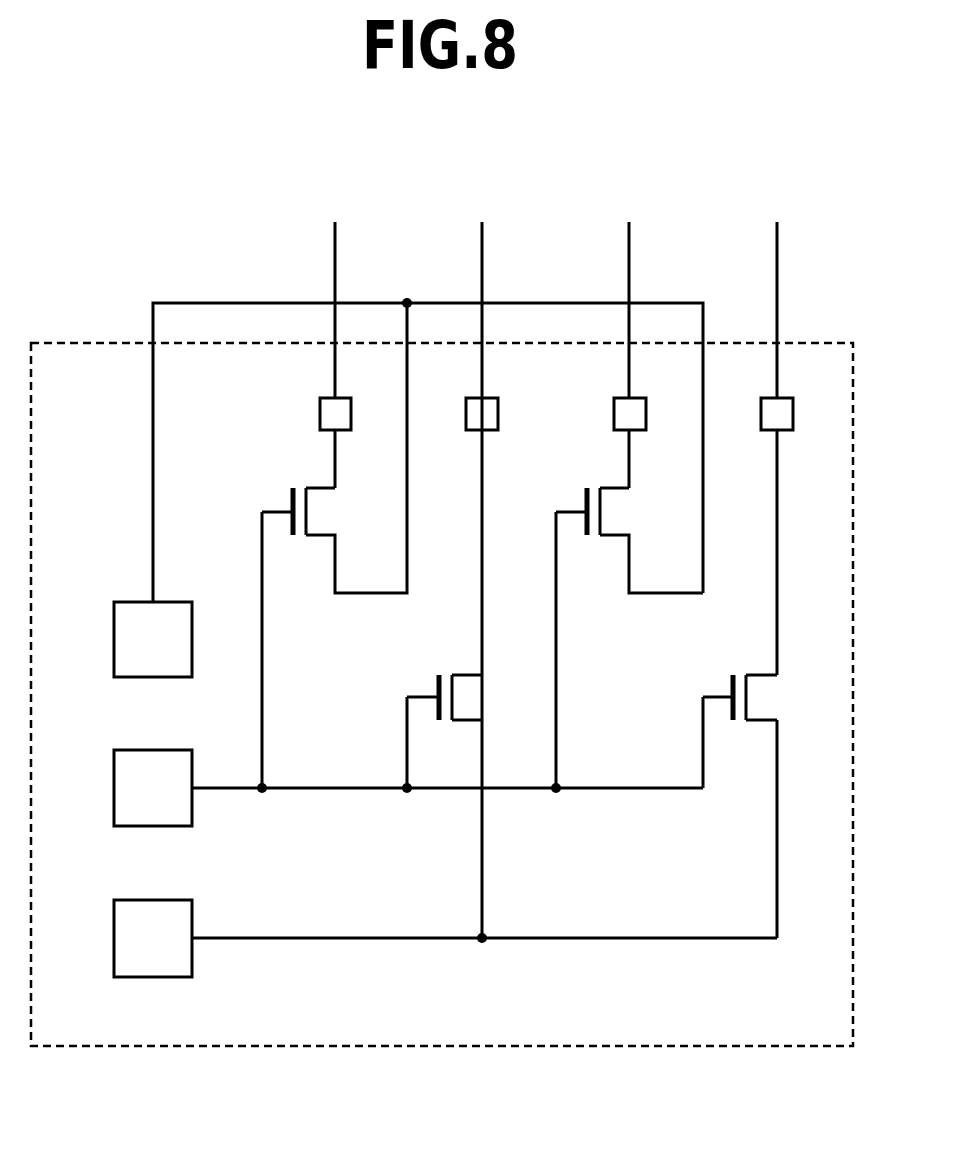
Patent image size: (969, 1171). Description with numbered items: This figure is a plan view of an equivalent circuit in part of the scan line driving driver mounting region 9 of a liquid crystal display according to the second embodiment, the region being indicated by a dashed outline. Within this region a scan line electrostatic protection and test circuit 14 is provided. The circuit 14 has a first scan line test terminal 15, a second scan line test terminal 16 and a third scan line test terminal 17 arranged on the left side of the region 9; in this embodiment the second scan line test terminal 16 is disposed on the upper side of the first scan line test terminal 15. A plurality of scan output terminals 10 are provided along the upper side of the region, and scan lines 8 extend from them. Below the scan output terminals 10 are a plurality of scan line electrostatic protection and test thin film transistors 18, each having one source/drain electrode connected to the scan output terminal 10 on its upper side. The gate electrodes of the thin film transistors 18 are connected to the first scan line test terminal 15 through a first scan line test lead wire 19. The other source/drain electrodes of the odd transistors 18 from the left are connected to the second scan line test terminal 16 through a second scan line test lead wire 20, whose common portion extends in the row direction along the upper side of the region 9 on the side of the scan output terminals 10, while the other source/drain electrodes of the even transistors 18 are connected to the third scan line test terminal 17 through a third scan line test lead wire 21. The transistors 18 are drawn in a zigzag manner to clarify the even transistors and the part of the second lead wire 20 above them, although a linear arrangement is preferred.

The scan line 8 is at (335, 245).
The scan line driving driver mounting region 9 is at (336, 1030).
The scan output terminal 10 is at (351, 420).
The scan line electrostatic protection and test circuit 14 is at (540, 1012).
The first scan line test terminal 15 is at (172, 750).
The second scan line test terminal 16 is at (172, 602).
The third scan line test terminal 17 is at (172, 900).
The scan line electrostatic protection and test thin film transistor 18 is at (272, 482).
The first scan line test lead wire 19 is at (353, 800).
The second scan line test lead wire 20 is at (248, 303).
The third scan line test lead wire 21 is at (640, 940).